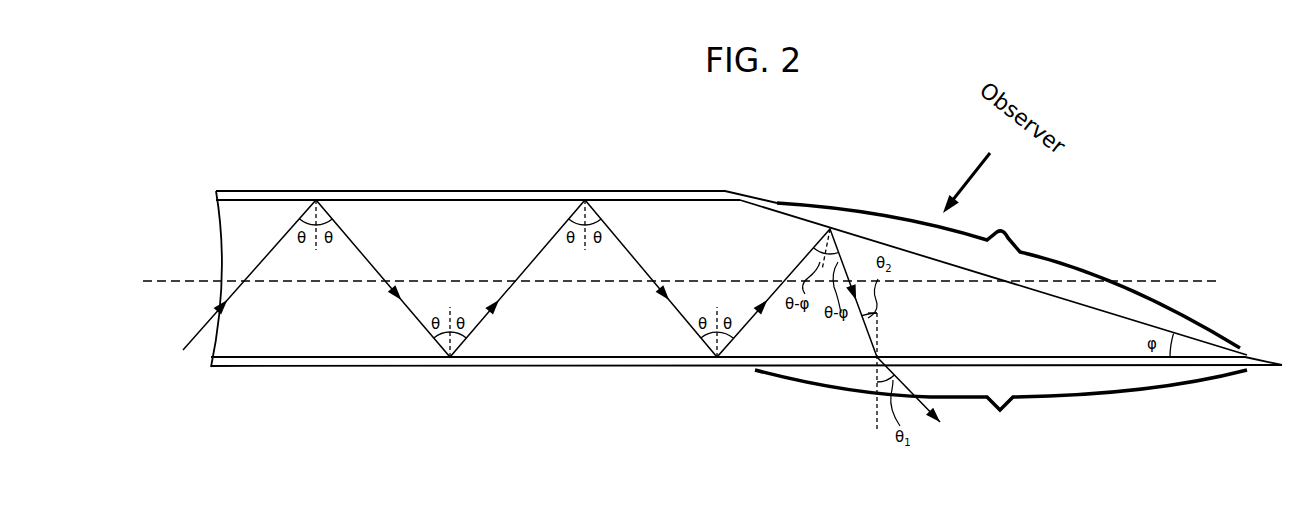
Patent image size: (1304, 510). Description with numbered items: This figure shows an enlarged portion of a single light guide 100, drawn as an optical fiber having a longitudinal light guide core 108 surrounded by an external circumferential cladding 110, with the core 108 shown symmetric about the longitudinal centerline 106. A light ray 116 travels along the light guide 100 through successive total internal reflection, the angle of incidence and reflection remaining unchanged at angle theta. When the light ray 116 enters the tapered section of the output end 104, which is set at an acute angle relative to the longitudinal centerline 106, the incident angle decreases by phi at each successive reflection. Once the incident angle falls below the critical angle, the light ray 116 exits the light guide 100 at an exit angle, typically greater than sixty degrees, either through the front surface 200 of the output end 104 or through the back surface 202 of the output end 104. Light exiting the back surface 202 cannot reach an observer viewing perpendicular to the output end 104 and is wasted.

The light guide 100 is at (432, 182).
The output end 104 is at (777, 205).
The longitudinal centerline 106 is at (703, 282).
The light guide core 108 is at (363, 337).
The external circumferential cladding 110 is at (245, 200).
The light ray 116 is at (564, 325).
The front surface 200 is at (1008, 275).
The back surface 202 is at (1001, 405).